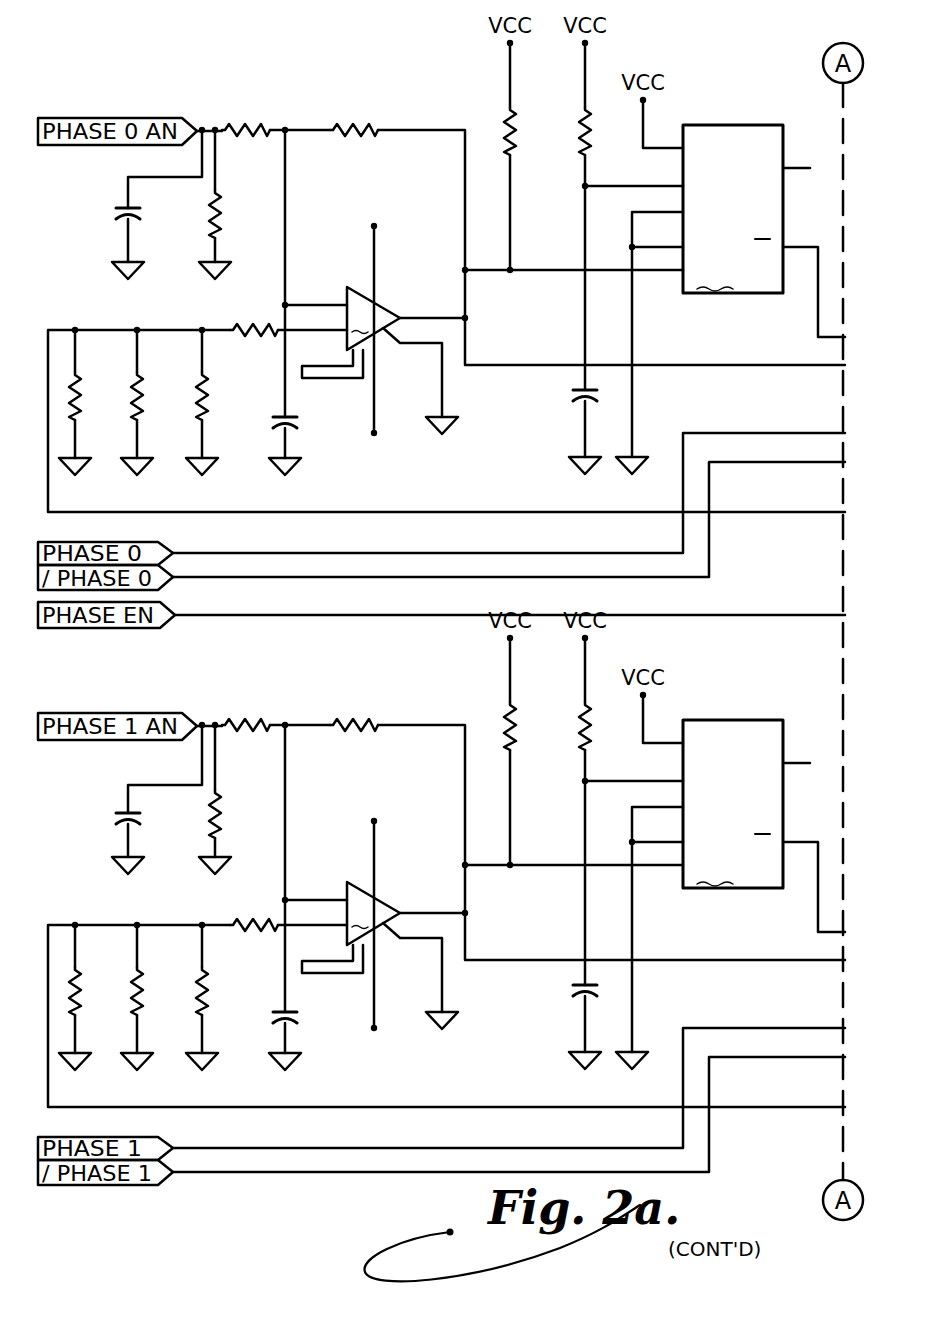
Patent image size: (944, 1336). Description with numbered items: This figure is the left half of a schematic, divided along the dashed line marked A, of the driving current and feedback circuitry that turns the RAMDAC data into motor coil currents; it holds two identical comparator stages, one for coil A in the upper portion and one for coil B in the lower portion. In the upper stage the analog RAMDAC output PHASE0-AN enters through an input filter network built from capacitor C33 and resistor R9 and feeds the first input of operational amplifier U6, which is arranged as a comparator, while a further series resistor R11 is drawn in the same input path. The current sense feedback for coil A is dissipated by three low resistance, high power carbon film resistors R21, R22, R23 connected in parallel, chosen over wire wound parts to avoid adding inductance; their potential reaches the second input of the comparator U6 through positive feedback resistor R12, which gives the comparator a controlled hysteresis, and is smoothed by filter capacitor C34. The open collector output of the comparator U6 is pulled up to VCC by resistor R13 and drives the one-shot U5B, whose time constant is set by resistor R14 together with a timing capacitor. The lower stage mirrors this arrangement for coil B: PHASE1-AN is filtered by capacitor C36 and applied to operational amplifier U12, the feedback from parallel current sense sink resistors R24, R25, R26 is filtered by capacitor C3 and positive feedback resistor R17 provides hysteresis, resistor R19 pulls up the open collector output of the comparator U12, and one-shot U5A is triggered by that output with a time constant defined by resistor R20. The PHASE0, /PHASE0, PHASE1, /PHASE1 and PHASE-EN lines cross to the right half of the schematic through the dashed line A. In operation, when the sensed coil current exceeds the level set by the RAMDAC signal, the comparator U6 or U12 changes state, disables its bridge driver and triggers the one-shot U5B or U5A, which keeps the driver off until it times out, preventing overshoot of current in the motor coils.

The resistor R11 (1M) R11 is at (354, 126).
The resistor R9 is at (232, 214).
The capacitor C33 is at (150, 209).
The positive feedback resistor R12 is at (254, 328).
The current sense sink resistor R21 is at (97, 394).
The current sense sink resistor R22 is at (159, 394).
The current sense sink resistor R23 is at (223, 394).
The filter capacitor C34 is at (306, 419).
The operational amplifier U6 is at (380, 304).
The resistor R13 is at (533, 128).
The resistor R14 is at (608, 128).
The one-shot U5B is at (733, 191).
The positive feedback resistor R17 is at (354, 721).
The capacitor C36 is at (151, 814).
The current sense sink resistor R24 is at (97, 989).
The current sense sink resistor R25 is at (159, 989).
The current sense sink resistor R26 is at (223, 989).
The capacitor C3 is at (303, 1014).
The operational amplifier U12 is at (385, 899).
The resistor R19 is at (533, 723).
The resistor R20 is at (608, 723).
The one-shot U5A is at (733, 786).